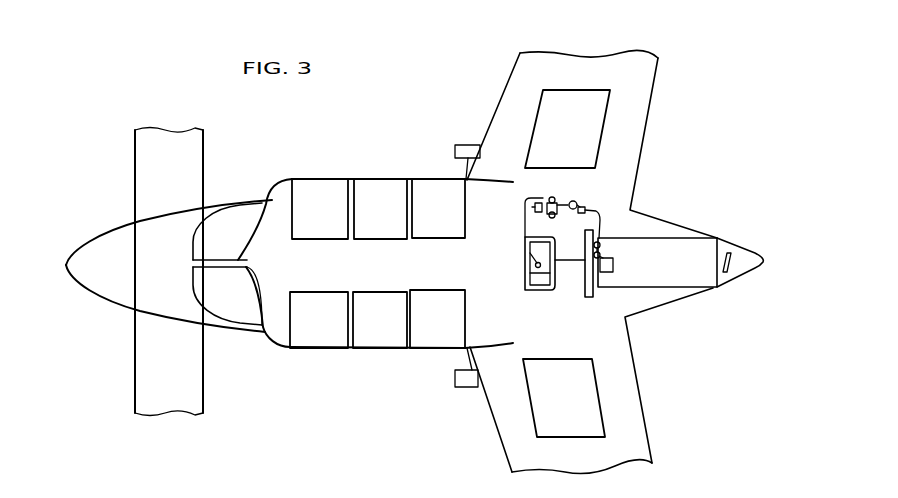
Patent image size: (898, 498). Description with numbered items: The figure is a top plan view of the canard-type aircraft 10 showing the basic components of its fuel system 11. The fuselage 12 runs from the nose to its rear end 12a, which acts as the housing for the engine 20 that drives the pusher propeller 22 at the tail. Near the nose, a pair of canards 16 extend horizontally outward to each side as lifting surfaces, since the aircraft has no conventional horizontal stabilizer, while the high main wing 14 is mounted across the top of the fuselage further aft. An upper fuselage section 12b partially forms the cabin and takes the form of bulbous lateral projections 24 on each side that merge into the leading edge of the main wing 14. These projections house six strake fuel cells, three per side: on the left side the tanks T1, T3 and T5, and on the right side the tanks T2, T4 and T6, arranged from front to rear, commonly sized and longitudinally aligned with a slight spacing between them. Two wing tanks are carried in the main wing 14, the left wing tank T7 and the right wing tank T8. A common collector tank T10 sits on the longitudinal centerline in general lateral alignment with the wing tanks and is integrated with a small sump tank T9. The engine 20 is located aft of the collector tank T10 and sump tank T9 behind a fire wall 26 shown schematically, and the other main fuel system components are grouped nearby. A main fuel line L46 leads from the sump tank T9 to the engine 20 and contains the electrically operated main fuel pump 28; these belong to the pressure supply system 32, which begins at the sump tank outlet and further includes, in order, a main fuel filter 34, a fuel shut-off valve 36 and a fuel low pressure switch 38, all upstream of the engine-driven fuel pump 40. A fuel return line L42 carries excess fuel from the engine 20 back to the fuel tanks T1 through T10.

The aircraft 10 is at (105, 324).
The fuel system 11 is at (235, 313).
The fuselage 12 is at (218, 198).
The rear end of fuselage 12a is at (707, 292).
The upper fuselage section 12b is at (257, 330).
The main wing 14 is at (638, 105).
The canards 16 is at (140, 158).
The engine 20 is at (665, 277).
The propeller 22 is at (733, 255).
The bulbous lateral projections 24 is at (285, 180).
The fire wall 26 is at (590, 298).
The main fuel pump 28 is at (555, 197).
The pressure supply system 32 is at (578, 185).
The main fuel filter 34 is at (578, 200).
The fuel shut-off valve 36 is at (587, 207).
The fuel low pressure switch 38 is at (600, 237).
The engine-driven fuel pump 40 is at (607, 247).
The strake fuel tank T1 is at (330, 338).
The strake fuel tank T2 is at (318, 193).
The strake fuel tank T3 is at (388, 333).
The strake fuel tank T4 is at (373, 200).
The strake fuel tank T5 is at (443, 337).
The strake fuel tank T6 is at (430, 198).
The left wing tank T7 is at (587, 428).
The right wing tank T8 is at (572, 97).
The sump tank T9 is at (525, 263).
The common collector tank T10 is at (532, 280).
The fuel return line L42 is at (570, 263).
The main fuel line L46 is at (523, 187).